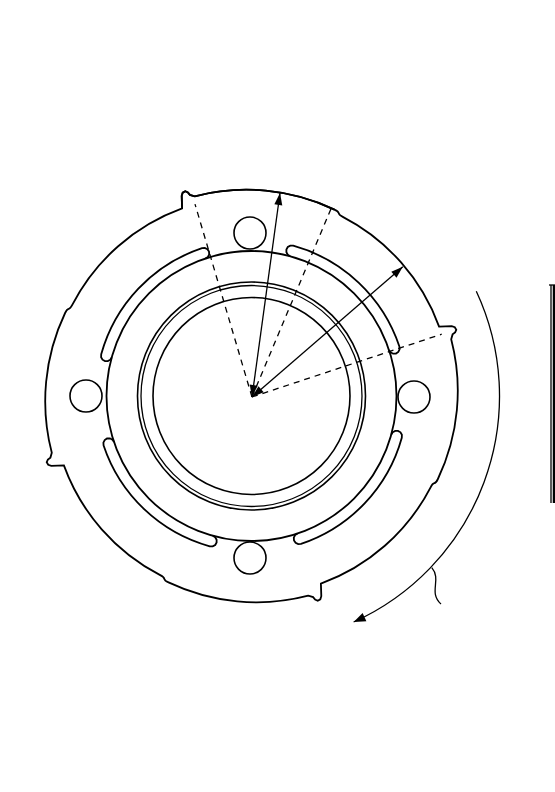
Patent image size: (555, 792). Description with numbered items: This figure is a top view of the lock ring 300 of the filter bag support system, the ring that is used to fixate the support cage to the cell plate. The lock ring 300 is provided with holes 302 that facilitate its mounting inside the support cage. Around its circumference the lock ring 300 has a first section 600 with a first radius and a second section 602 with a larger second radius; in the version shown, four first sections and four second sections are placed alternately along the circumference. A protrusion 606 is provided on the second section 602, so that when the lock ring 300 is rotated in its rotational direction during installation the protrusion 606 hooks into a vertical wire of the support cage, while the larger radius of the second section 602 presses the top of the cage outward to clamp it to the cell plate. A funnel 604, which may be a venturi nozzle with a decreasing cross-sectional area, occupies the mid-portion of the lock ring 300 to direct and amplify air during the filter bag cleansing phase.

The lock ring 300 is at (335, 93).
The holes 302 is at (243, 560).
The first section 600 is at (342, 201).
The second section 602 is at (335, 198).
The funnel 604 is at (152, 312).
The protrusion 606 is at (173, 198).